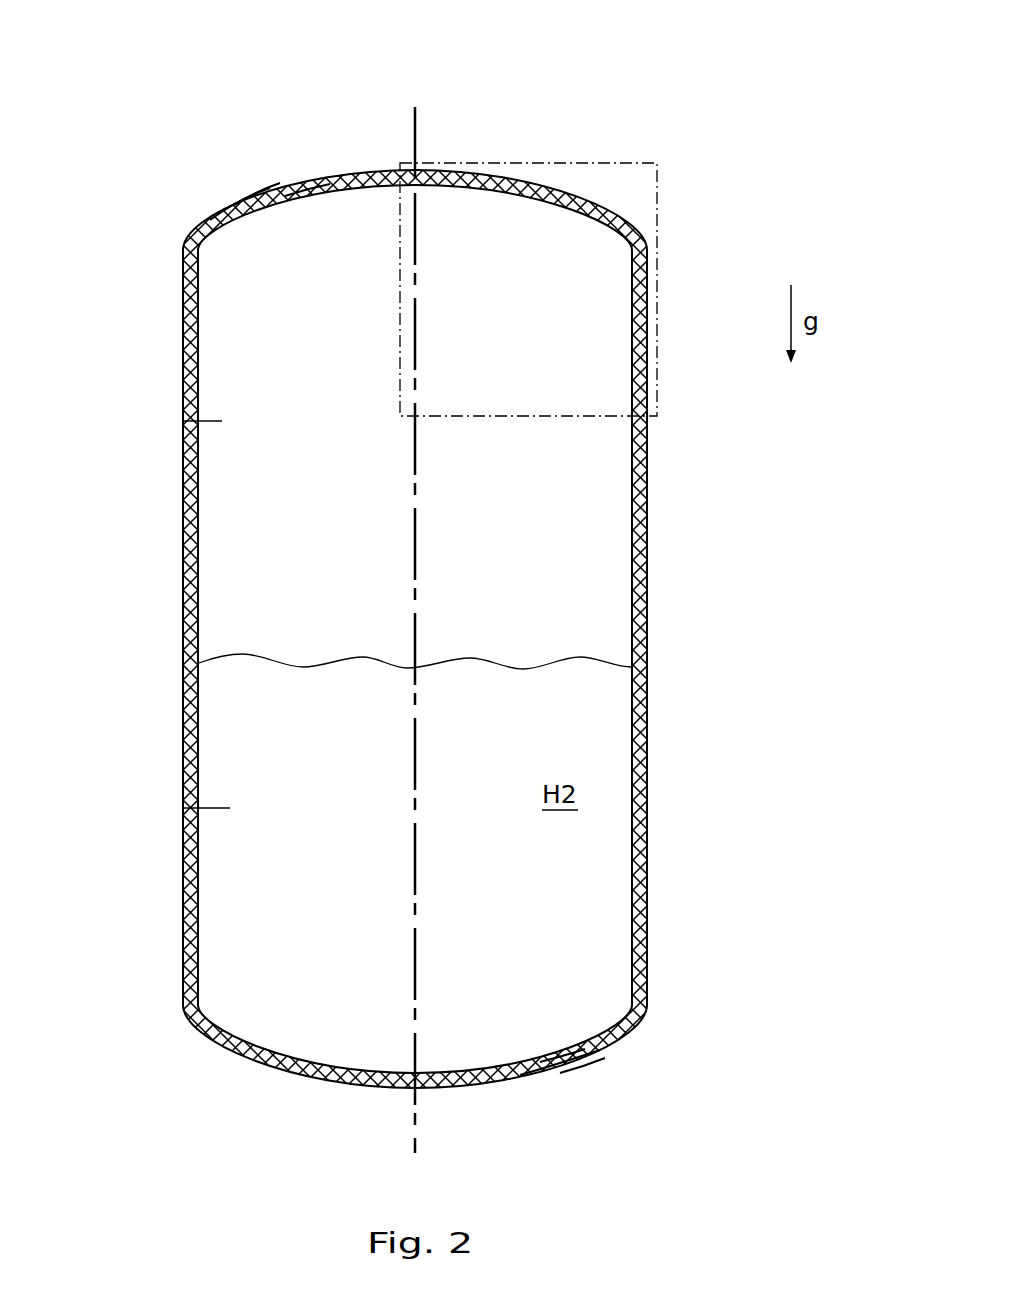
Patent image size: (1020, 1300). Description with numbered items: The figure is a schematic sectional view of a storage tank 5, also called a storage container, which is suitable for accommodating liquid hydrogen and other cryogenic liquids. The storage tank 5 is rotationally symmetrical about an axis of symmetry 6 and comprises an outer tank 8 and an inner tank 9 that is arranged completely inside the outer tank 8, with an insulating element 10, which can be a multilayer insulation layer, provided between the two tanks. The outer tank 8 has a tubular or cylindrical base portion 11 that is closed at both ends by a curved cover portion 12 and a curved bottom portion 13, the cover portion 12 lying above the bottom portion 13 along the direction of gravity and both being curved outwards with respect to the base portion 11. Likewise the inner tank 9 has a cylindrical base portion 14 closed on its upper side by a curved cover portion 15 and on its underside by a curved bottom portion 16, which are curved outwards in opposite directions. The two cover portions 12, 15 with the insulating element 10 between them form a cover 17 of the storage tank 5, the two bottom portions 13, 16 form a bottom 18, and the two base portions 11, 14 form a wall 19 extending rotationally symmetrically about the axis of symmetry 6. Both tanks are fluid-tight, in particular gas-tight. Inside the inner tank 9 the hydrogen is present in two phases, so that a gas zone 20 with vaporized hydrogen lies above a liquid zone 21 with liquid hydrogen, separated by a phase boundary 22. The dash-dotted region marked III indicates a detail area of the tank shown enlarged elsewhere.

The storage tank 5 is at (388, 68).
The axis of symmetry 6 is at (415, 141).
The outer tank 8 is at (172, 903).
The inner tank 9 is at (212, 860).
The insulating element 10 is at (198, 962).
The base portion 11 is at (647, 820).
The cover portion 12 is at (255, 193).
The bottom portion 13 is at (563, 1062).
The base portion 14 is at (647, 860).
The cover portion 15 is at (303, 192).
The bottom portion 16 is at (575, 1050).
The cover 17 is at (296, 120).
The bottom 18 is at (635, 1140).
The wall 19 is at (735, 783).
The gas zone 20 is at (183, 421).
The liquid zone 21 is at (183, 808).
The phase boundary 22 is at (338, 660).
The detail region III is at (658, 232).